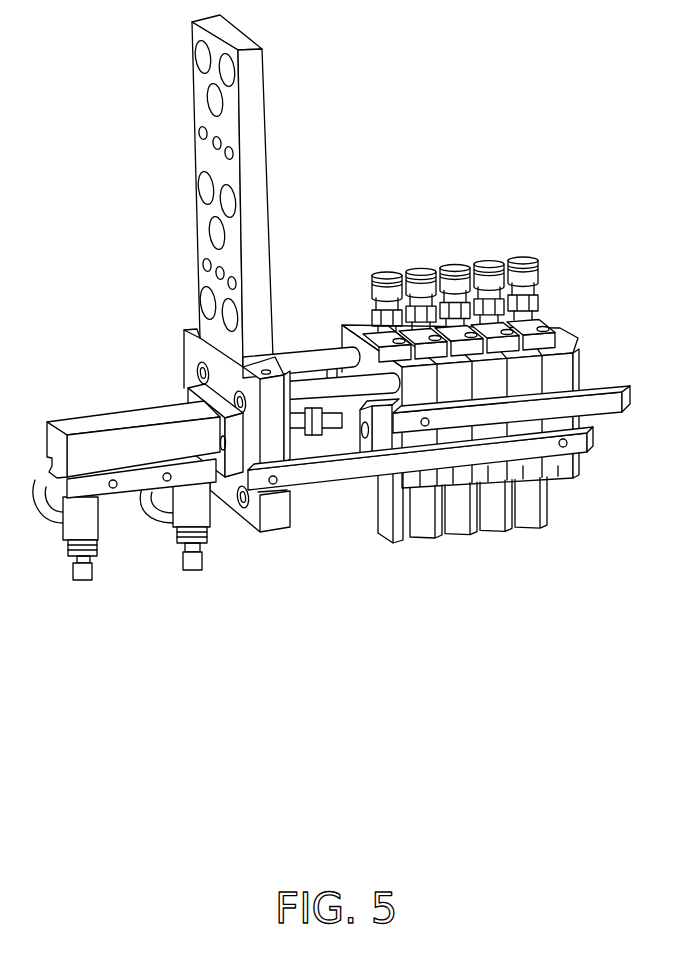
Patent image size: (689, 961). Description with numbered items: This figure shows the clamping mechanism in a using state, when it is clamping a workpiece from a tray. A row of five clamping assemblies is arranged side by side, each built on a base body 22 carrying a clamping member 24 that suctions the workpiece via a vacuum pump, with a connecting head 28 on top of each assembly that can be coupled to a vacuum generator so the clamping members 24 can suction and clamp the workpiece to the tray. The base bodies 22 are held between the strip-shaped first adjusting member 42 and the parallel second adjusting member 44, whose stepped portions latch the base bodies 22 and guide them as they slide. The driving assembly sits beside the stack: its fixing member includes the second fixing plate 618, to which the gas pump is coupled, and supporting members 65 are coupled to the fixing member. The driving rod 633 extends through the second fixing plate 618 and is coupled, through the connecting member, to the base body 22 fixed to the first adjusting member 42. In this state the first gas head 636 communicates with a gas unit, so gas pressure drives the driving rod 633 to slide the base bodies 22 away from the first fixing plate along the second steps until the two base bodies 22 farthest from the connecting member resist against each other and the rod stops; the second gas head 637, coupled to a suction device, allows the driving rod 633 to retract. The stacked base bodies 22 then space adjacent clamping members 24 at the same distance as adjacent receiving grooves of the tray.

The base body 22 is at (352, 330).
The clamping member 24 is at (438, 540).
The connecting head 28 is at (530, 282).
The first adjusting member 42 is at (612, 402).
The second adjusting member 44 is at (585, 442).
The supporting member 65 is at (308, 382).
The second fixing plate 618 is at (187, 398).
The driving rod 633 is at (348, 413).
The first gas head 636 is at (47, 507).
The second gas head 637 is at (155, 503).